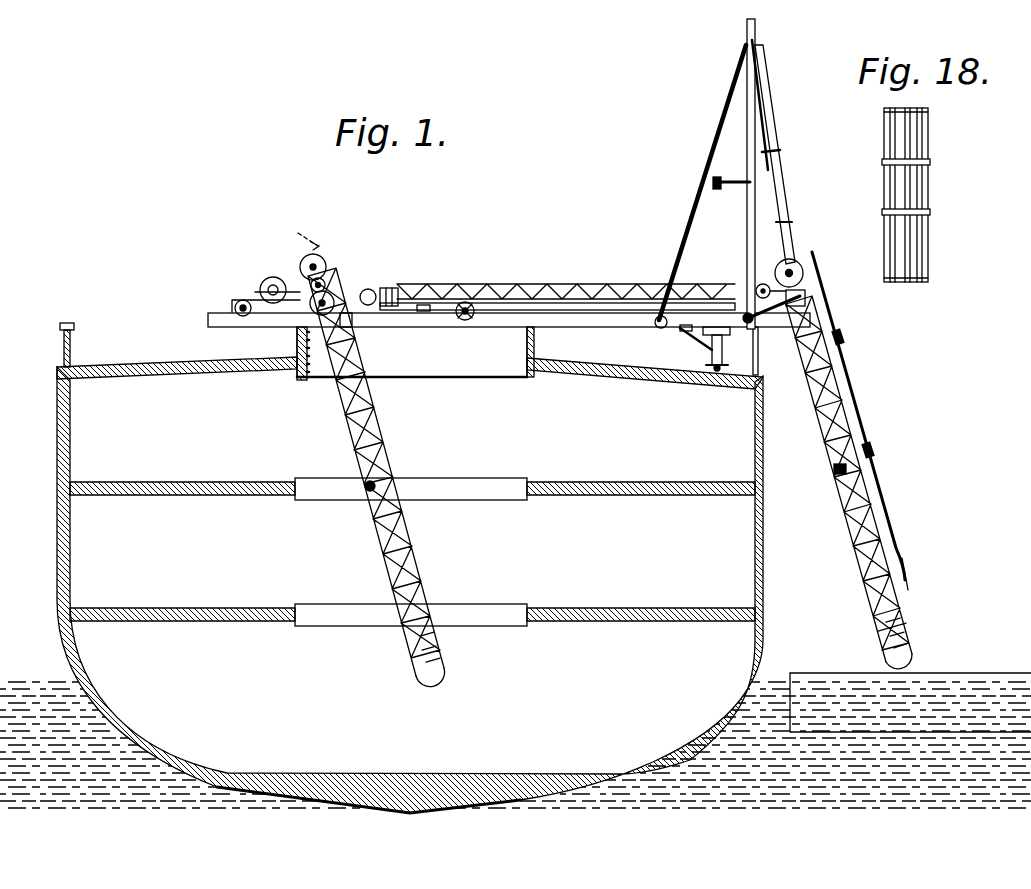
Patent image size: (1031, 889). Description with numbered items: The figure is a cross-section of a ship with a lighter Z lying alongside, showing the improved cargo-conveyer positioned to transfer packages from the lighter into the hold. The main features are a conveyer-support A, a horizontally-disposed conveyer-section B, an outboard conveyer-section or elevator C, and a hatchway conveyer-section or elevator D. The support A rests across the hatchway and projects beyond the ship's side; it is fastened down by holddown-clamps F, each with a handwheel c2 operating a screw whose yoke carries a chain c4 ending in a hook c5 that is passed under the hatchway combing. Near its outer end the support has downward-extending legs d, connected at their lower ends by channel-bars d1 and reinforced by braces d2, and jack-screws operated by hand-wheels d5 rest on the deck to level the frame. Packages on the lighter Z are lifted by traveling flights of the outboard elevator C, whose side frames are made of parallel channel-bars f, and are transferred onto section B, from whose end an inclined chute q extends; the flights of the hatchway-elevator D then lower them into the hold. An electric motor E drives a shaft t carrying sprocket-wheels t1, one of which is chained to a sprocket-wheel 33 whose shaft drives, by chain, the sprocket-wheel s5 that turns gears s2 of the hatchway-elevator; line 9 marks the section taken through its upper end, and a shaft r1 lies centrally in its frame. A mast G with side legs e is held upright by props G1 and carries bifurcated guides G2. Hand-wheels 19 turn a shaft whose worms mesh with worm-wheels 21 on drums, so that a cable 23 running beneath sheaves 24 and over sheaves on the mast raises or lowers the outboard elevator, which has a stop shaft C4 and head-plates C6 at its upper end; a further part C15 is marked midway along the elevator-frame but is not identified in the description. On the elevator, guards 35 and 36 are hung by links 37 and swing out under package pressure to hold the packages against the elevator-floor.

In FIG. 1, the conveyer-support A is at (612, 327).
In FIG. 1, the holddown-clamp F is at (362, 372).
In FIG. 1, the hatchway conveyer-section or elevator D is at (380, 438).
In FIG. 1, the shaft r1 is at (366, 493).
In FIG. 1, the chain c4 is at (296, 345).
In FIG. 1, the hook c5 is at (300, 379).
In FIG. 1, the electric motor E is at (265, 283).
In FIG. 1, the sprocket-wheel t1 is at (258, 302).
In FIG. 1, the shaft t is at (238, 312).
In FIG. 1, the handwheel c2 is at (299, 263).
In FIG. 1, the section line 9 is at (303, 226).
In FIG. 1, the sprocket-wheel s5 is at (328, 260).
In FIG. 1, the gear s2 is at (331, 290).
In FIG. 1, the sprocket-wheel 33 is at (350, 322).
In FIG. 1, the horizontally-disposed conveyer-section B is at (557, 281).
In FIG. 1, the inclined plate or chute q is at (364, 296).
In FIG. 1, the hand-wheel 19 is at (469, 300).
In FIG. 1, the worm-wheel 21 is at (470, 322).
In FIG. 1, the sheave 24 is at (658, 314).
In FIG. 1, the frame or mast G is at (745, 47).
In FIG. 1, the prop G1 is at (703, 210).
In FIG. 1, the bifurcated guide G2 is at (770, 122).
In FIG. 1, the cable 23 is at (713, 183).
In FIG. 1, the side bar or leg e is at (744, 308).
In FIG. 1, the head-plate C6 is at (805, 275).
In FIG. 1, the shaft or stop C4 is at (806, 302).
In FIG. 1, the leg d is at (728, 352).
In FIG. 1, the brace d2 is at (706, 340).
In FIG. 1, the channel-bar d1 is at (710, 368).
In FIG. 1, the hand-wheel d5 is at (720, 372).
In FIG. 1, the outboard conveyer-section or elevator C is at (842, 508).
In FIG. 1, the channel-bar f is at (895, 612).
In FIG. 1, the guard 36 is at (848, 352).
In FIG. 18, the guard 36 is at (930, 185).
In FIG. 1, the link 37 is at (840, 336).
In FIG. 1, the guard 35 is at (916, 530).
In FIG. 1, the clamp block C15 is at (834, 470).
In FIG. 1, the lighter Z is at (812, 680).